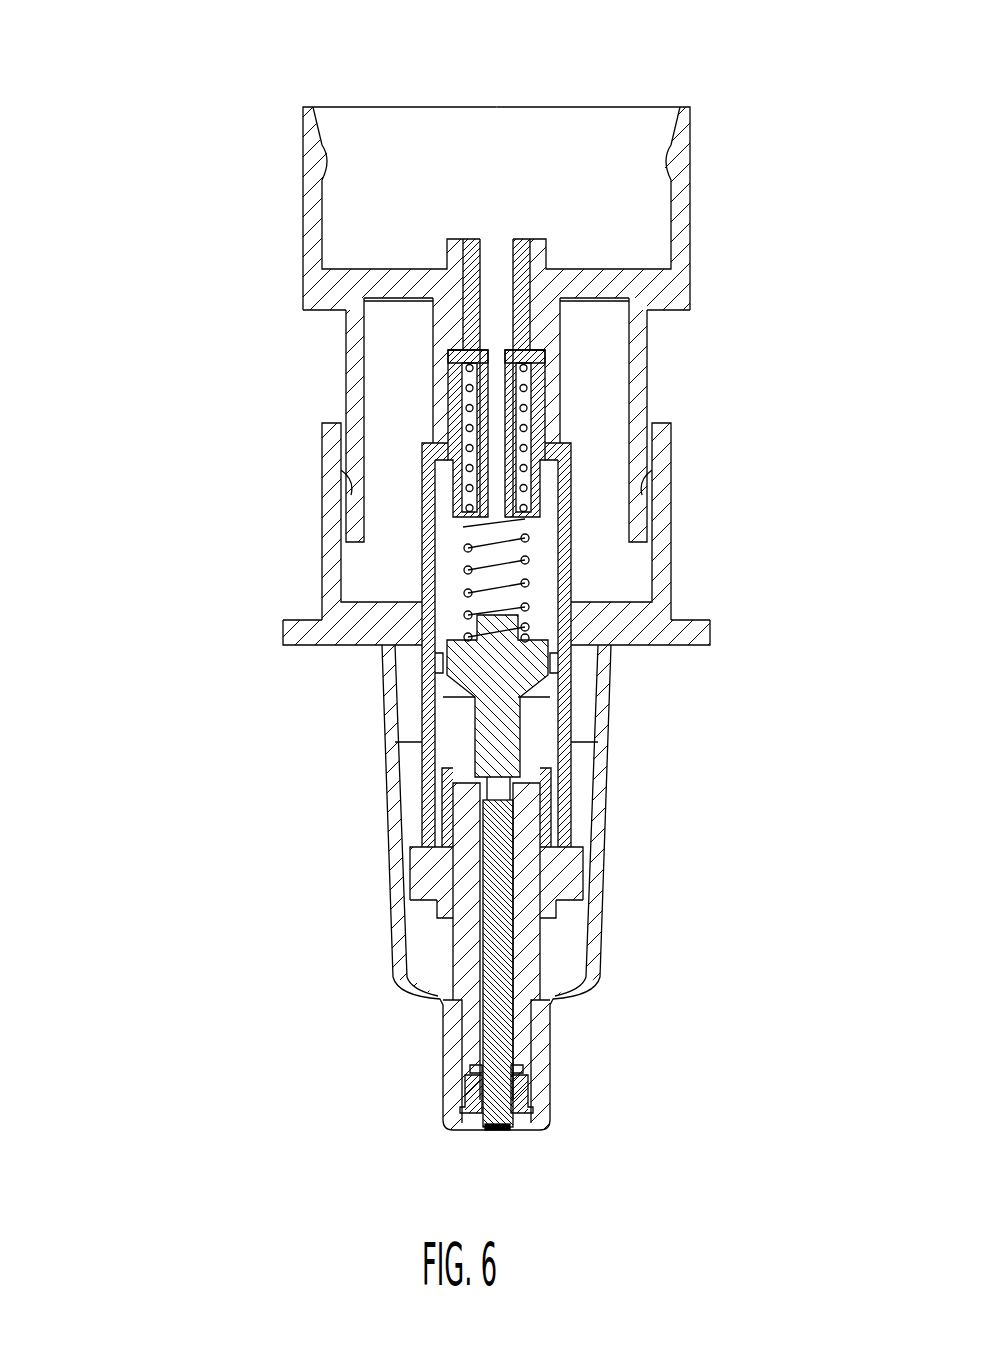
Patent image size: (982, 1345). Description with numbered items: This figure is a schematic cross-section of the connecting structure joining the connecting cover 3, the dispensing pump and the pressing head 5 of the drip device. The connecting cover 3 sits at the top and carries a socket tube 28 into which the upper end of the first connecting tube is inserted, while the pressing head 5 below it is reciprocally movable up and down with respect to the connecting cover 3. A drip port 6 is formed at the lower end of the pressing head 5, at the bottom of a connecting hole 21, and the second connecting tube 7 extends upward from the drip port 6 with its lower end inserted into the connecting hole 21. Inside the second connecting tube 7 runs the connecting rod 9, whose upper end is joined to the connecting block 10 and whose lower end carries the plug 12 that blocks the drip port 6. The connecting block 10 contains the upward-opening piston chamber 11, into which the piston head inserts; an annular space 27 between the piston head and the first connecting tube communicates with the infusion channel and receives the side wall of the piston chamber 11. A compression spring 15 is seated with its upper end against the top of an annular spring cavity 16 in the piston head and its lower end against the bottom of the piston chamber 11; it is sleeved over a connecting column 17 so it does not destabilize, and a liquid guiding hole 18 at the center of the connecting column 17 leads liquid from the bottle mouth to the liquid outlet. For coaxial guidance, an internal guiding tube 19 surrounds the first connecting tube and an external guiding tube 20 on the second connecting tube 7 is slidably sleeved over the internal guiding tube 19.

The connecting cover 3 is at (303, 213).
The pressing head 5 is at (387, 783).
The drip port 6 is at (493, 1130).
The second connecting tube 7 is at (463, 972).
The connecting rod 9 is at (533, 1017).
The connecting block 10 is at (563, 772).
The piston chamber 11 is at (517, 582).
The plug 12 is at (535, 1113).
The compression spring 15 is at (450, 397).
The spring cavity 16 is at (545, 400).
The connecting column 17 is at (530, 465).
The liquid guiding hole 18 is at (542, 348).
The internal guiding tube 19 is at (345, 387).
The external guiding tube 20 is at (322, 540).
The connecting hole 21 is at (467, 1070).
The annular space 27 is at (552, 493).
The socket tube 28 is at (453, 303).